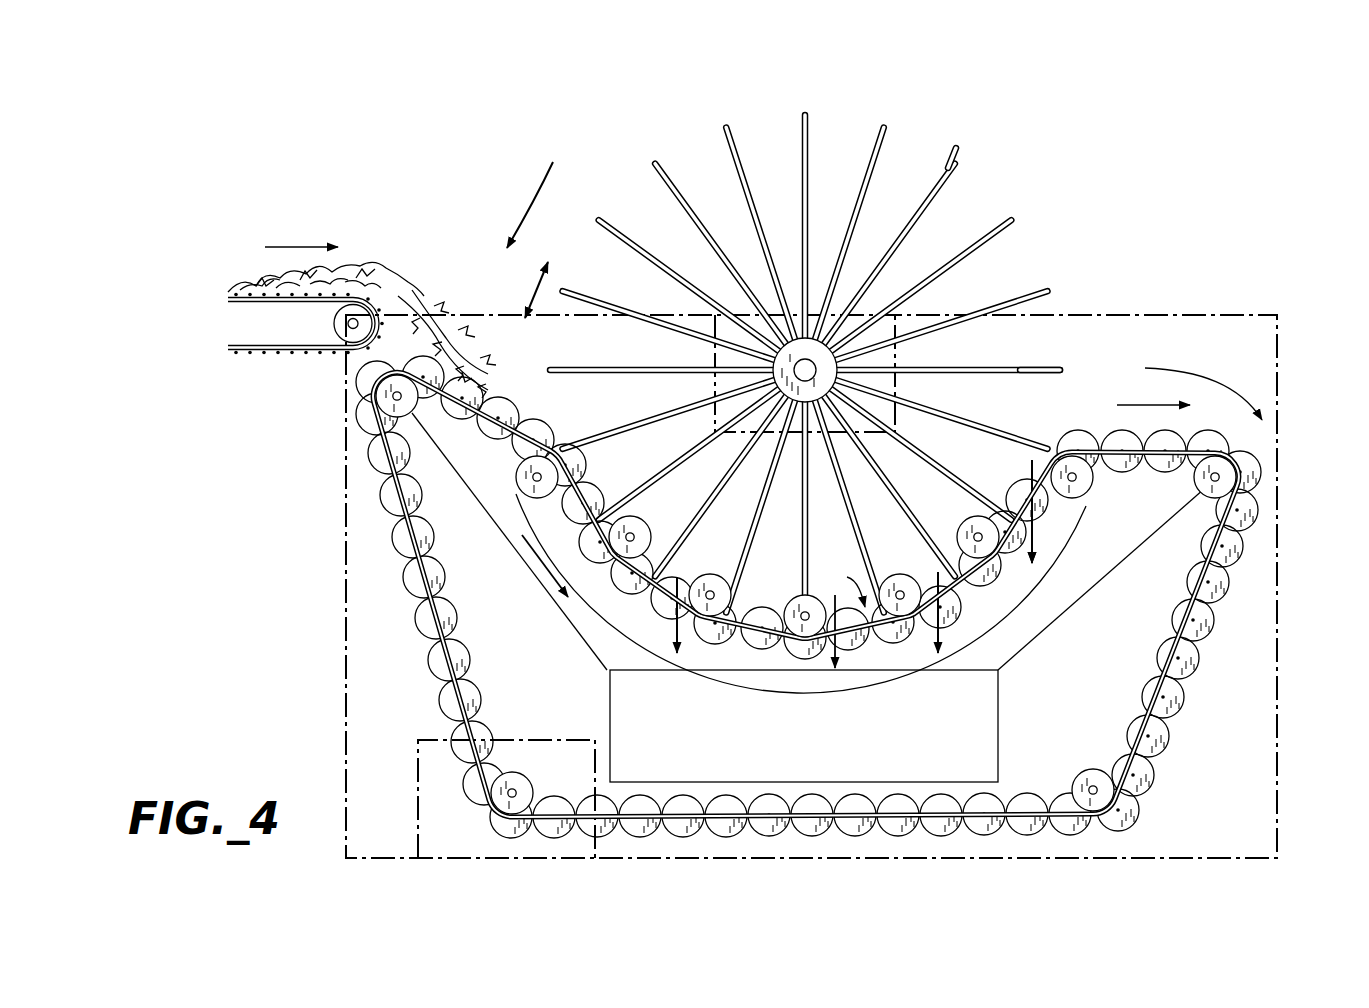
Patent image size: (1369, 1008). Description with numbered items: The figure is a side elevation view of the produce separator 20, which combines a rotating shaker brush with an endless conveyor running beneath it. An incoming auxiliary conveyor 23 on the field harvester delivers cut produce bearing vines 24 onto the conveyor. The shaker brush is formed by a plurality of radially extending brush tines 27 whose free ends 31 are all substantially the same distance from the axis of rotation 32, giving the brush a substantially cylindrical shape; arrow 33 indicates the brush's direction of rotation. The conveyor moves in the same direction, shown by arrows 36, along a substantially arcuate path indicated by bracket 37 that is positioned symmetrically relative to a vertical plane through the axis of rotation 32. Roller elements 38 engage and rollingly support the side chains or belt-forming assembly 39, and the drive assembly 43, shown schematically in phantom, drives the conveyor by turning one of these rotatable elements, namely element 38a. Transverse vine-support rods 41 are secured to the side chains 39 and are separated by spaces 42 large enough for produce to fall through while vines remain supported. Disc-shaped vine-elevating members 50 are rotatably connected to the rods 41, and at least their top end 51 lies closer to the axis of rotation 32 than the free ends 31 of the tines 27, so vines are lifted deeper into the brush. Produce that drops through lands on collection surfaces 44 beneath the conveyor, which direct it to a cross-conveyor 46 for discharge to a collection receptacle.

The produce separator 20 is at (333, 718).
The incoming auxiliary conveyor 23 is at (297, 354).
The produce bearing vines 24 is at (398, 282).
The brush tines 27 is at (672, 180).
The free ends 31 is at (952, 168).
The axis of rotation 32 is at (812, 368).
The arrow 33 is at (533, 205).
The arrows 36 is at (1186, 384).
The arcuate path 37 is at (808, 690).
The roller elements 38 is at (636, 527).
The driven rotatable element 38a is at (527, 783).
The side chains or belt-forming assembly 39 is at (487, 715).
The vine-support rods 41 is at (930, 572).
The spaces 42 is at (841, 615).
The drive assembly 43 is at (706, 356).
The produce collection surfaces 44 is at (512, 560).
The cross-conveyor 46 is at (1078, 789).
The vine-elevating members 50 is at (1080, 432).
The top end 51 is at (590, 462).